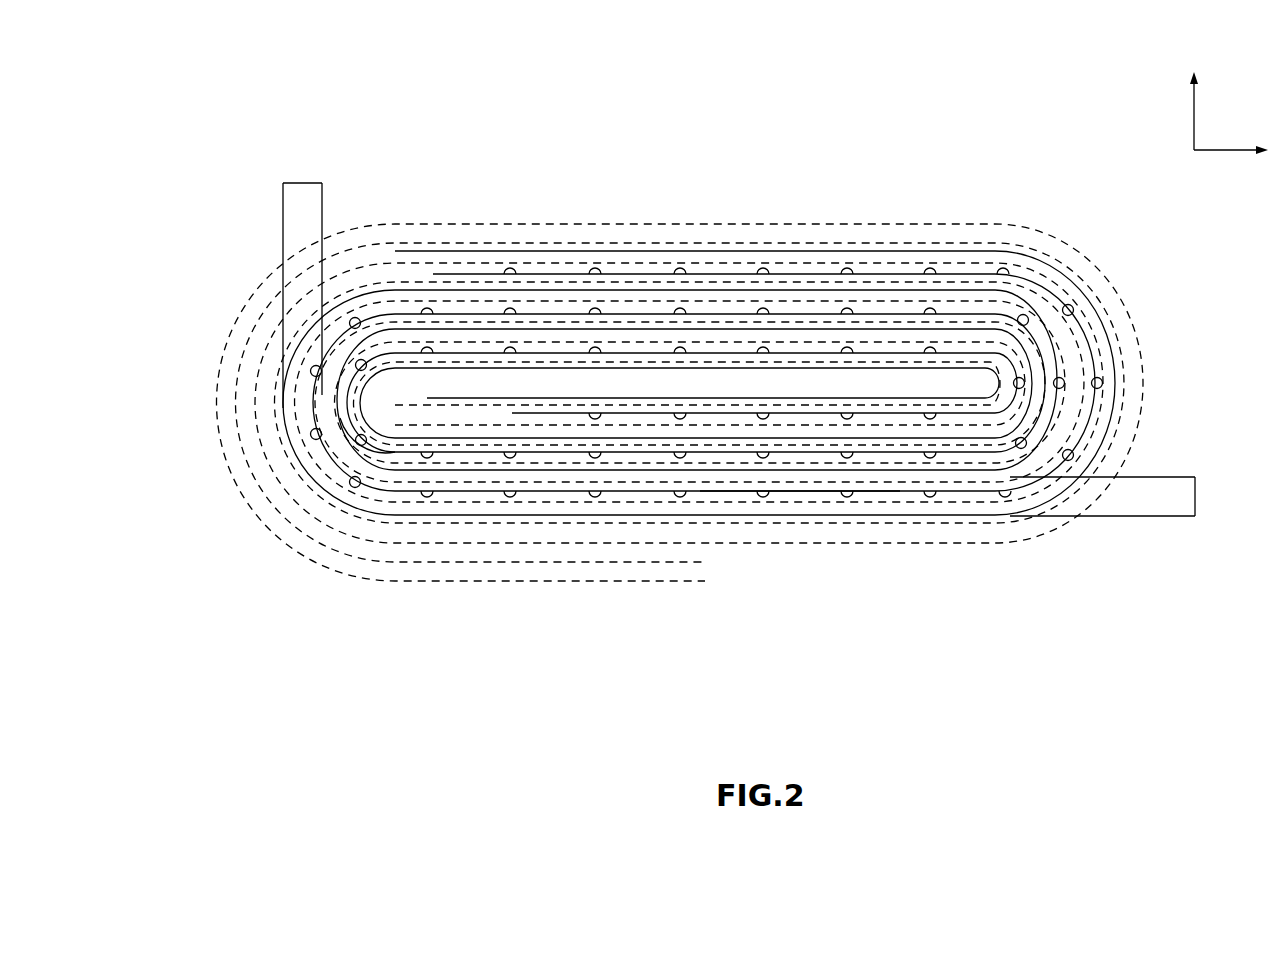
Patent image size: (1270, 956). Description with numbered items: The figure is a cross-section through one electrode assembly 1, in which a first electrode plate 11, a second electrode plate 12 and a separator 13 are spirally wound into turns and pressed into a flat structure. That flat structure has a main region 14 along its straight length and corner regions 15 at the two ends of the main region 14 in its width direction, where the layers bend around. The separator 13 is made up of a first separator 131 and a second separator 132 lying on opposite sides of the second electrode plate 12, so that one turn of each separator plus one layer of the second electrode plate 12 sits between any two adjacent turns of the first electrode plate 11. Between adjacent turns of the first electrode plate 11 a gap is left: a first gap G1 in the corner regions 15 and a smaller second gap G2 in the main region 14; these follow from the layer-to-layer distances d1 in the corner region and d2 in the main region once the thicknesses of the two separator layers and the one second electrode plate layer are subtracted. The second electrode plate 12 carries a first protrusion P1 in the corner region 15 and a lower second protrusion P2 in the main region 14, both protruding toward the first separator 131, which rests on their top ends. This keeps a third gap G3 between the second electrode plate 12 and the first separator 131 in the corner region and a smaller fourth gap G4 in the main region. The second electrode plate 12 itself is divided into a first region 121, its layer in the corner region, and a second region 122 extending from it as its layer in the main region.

The electrode assembly 1 is at (242, 102).
The first electrode plate 11 is at (443, 250).
The second electrode plate 12 is at (550, 272).
The first region 121 is at (331, 492).
The second region 122 is at (800, 490).
The separator 13 is at (680, 354).
The first separator 131 is at (731, 223).
The second separator 132 is at (673, 242).
The main region 14 is at (765, 604).
The corner region 15 is at (180, 413).
The first protrusion P1 is at (353, 490).
The second protrusion P2 is at (847, 268).
The first gap G1 is at (306, 462).
The second gap G2 is at (520, 496).
The third gap G3 is at (304, 416).
The fourth gap G4 is at (628, 494).
The distance between two adjacent layers of the first electrode plate in the corner d1 is at (302, 286).
The distance between two adjacent layers of the first electrode plate in the main re d2 is at (1113, 496).